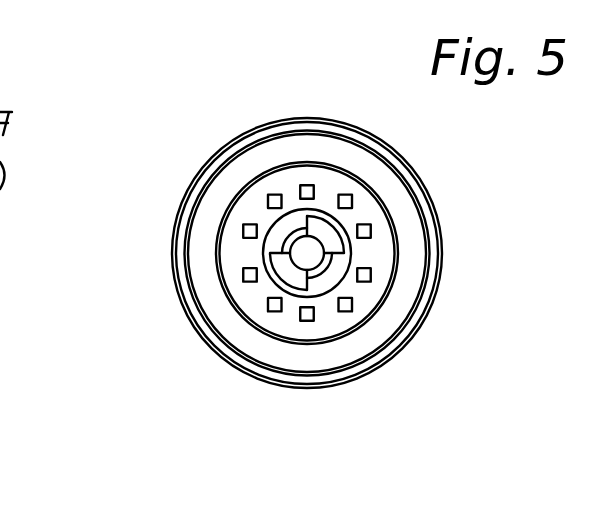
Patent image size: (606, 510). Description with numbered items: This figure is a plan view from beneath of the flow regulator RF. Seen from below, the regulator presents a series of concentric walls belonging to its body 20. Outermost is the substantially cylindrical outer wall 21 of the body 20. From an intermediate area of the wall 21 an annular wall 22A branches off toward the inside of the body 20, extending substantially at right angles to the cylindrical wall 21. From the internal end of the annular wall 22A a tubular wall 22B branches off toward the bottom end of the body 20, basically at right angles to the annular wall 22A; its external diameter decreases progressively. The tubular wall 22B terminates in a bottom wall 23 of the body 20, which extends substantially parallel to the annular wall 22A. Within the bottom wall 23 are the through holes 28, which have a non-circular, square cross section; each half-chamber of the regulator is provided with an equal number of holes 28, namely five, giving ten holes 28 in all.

The body 20 is at (443, 233).
The cylindrical outer wall 21 is at (378, 365).
The annular wall 22A is at (241, 170).
The tubular wall 22B is at (243, 315).
The bottom wall 23 is at (325, 181).
The through holes 28 is at (243, 232).
The flow regulator RF is at (447, 192).